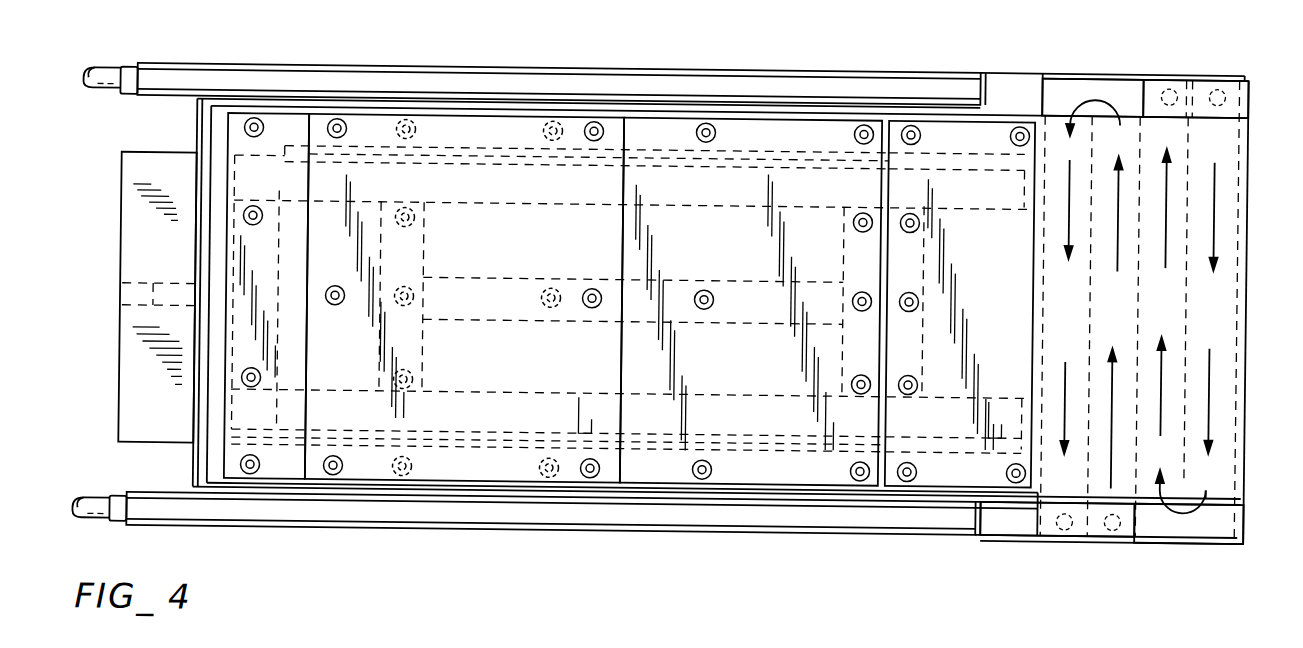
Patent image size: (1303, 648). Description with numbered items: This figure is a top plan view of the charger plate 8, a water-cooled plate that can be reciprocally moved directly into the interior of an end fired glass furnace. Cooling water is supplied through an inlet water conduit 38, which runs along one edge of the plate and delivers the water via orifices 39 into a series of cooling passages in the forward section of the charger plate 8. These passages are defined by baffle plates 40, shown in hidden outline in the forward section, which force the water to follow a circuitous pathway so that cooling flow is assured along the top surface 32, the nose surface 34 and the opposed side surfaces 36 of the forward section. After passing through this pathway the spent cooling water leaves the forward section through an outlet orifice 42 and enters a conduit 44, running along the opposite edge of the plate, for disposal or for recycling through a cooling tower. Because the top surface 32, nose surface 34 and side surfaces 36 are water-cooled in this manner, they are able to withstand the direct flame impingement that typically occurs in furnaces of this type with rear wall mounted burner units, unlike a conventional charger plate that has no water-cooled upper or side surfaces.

The charger plate 8 is at (1245, 168).
The top surface 32 is at (1226, 136).
The nose surface 34 is at (1246, 353).
The side surfaces 36 is at (1140, 74).
The inlet water conduit 38 is at (156, 46).
The orifices 39 is at (1017, 68).
The baffle plates 40 is at (1137, 292).
The outlet orifice 42 is at (1009, 523).
The conduit 44 is at (213, 518).